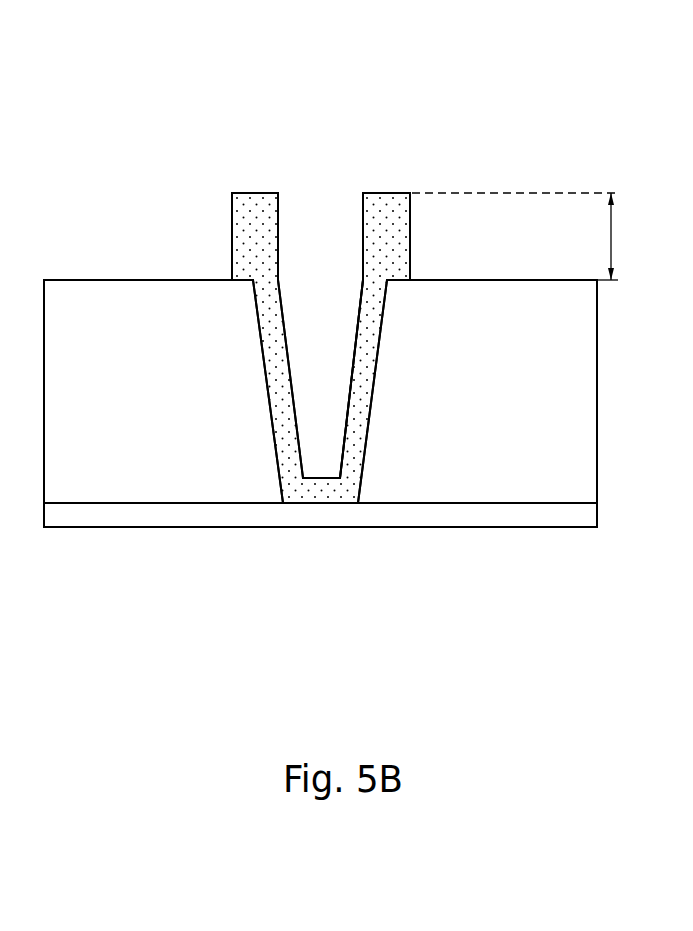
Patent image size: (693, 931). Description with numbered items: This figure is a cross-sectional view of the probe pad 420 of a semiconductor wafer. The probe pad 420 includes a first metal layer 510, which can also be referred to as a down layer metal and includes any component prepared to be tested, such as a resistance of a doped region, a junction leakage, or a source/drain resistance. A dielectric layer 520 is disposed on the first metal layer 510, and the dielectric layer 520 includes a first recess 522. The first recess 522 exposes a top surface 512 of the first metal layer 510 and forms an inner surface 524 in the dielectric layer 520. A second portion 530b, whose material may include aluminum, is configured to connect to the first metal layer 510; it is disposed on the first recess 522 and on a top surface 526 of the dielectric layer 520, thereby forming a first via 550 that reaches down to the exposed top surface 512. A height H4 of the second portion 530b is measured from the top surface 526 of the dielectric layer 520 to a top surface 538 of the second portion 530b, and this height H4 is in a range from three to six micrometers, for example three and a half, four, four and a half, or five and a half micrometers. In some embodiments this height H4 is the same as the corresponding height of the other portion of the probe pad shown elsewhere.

The probe pad 420 is at (80, 48).
The first metal layer 510 is at (596, 514).
The dielectric layer 520 is at (596, 393).
The first recess 522 is at (320, 271).
The inner surface 524 is at (365, 377).
The top surface of the dielectric layer 526 is at (105, 280).
The top surface of the first metal layer 512 is at (320, 490).
The second portion 530b is at (408, 236).
The top surface of the second portion 538 is at (385, 192).
The first via 550 is at (323, 186).
The height of the second portion H4 is at (533, 236).